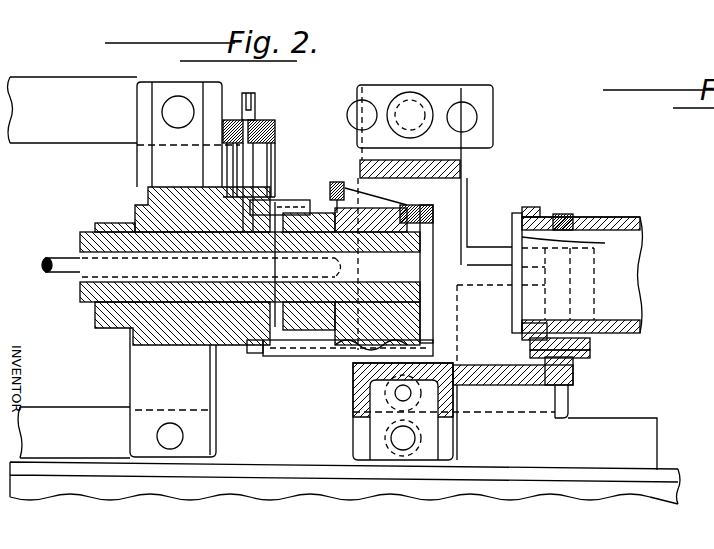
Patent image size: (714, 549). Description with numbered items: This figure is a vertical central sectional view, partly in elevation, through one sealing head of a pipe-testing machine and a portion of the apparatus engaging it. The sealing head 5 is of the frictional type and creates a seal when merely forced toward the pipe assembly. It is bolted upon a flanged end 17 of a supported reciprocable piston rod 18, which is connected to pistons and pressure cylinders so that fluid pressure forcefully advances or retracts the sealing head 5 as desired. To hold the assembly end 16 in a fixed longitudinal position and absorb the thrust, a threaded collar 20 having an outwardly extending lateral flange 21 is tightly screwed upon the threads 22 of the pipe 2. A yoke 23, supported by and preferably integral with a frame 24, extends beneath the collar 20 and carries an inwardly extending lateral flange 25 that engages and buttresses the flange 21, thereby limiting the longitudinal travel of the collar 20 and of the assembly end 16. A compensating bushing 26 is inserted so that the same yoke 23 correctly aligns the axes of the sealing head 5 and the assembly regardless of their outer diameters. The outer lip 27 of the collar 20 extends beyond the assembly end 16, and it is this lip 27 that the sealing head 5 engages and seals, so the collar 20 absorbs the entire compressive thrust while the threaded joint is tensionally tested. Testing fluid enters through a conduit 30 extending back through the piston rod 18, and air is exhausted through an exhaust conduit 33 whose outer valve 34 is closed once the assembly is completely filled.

The pipe 2 is at (618, 232).
The sealing head 5 is at (433, 228).
The assembly end 16 is at (600, 243).
The flanged end 17 is at (300, 352).
The piston rod 18 is at (78, 302).
The threaded collar 20 is at (541, 215).
The lateral flange 21 is at (531, 208).
The threads 22 is at (562, 214).
The yoke 23 is at (575, 385).
The frame 24 is at (463, 173).
The inwardly extending lateral flange 25 is at (592, 356).
The compensating bushing 26 is at (590, 349).
The lip 27 is at (514, 218).
The conduit 30 is at (78, 279).
The exhaust conduit 33 is at (338, 205).
The valve 34 is at (262, 125).